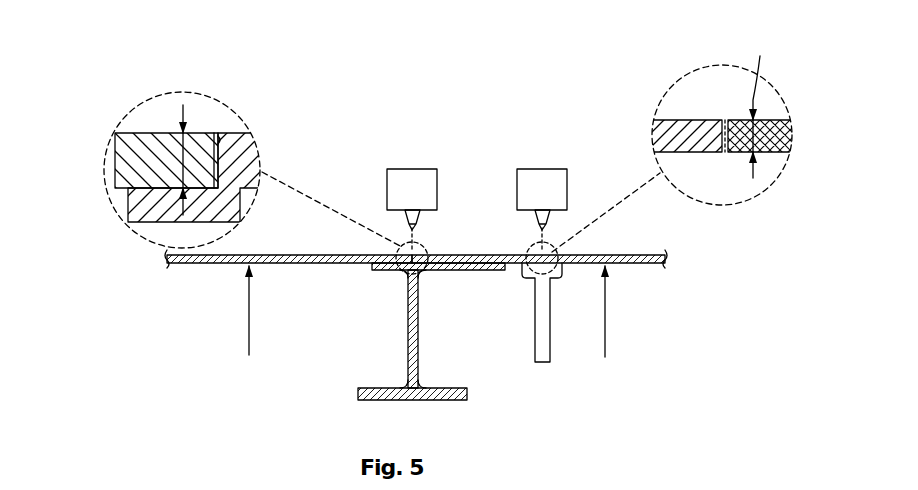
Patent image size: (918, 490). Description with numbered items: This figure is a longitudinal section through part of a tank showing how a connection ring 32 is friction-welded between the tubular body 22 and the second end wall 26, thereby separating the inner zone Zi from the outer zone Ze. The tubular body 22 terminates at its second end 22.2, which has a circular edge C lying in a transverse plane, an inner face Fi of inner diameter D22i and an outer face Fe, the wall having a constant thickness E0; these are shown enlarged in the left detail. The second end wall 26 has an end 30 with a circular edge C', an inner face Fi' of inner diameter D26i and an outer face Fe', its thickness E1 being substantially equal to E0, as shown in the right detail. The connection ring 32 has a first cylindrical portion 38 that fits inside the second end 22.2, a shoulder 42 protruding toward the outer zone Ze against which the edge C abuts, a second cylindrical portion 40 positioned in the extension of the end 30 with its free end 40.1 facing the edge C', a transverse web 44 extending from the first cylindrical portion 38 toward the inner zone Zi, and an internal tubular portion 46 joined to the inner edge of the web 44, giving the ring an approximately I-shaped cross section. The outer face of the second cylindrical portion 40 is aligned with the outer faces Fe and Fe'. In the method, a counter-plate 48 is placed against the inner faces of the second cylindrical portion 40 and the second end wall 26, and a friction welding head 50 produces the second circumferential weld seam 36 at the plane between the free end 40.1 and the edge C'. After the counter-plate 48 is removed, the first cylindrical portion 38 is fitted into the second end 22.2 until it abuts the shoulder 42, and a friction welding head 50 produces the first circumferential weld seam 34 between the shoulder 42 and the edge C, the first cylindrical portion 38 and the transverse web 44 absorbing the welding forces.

The tubular body 22 is at (131, 132).
The second end 22.2 is at (163, 152).
The second end wall 26 is at (633, 252).
The end 30 is at (578, 268).
The connection ring 32 is at (255, 136).
The first circumferential weld seam 34 is at (405, 250).
The second circumferential weld seam 36 is at (552, 250).
The first cylindrical portion 38 is at (151, 210).
The second cylindrical portion 40 is at (514, 250).
The free end 40.1 is at (509, 270).
The shoulder 42 is at (228, 142).
The transverse web 44 is at (407, 325).
The internal tubular portion 46 is at (405, 400).
The counter-plate 48 is at (552, 363).
The friction welding head 50 is at (422, 180).
The outer face Fe is at (246, 159).
The inner face Fi is at (139, 247).
The outer face Fe' is at (756, 178).
The inner face Fi' is at (743, 225).
The thickness E0 is at (188, 136).
The thickness E1 is at (767, 105).
The circular edge C is at (222, 97).
The circular edge C' is at (737, 81).
The inner diameter D22i is at (220, 310).
The inner diameter D26i is at (629, 311).
The outer zone Ze is at (332, 209).
The inner zone Zi is at (461, 305).